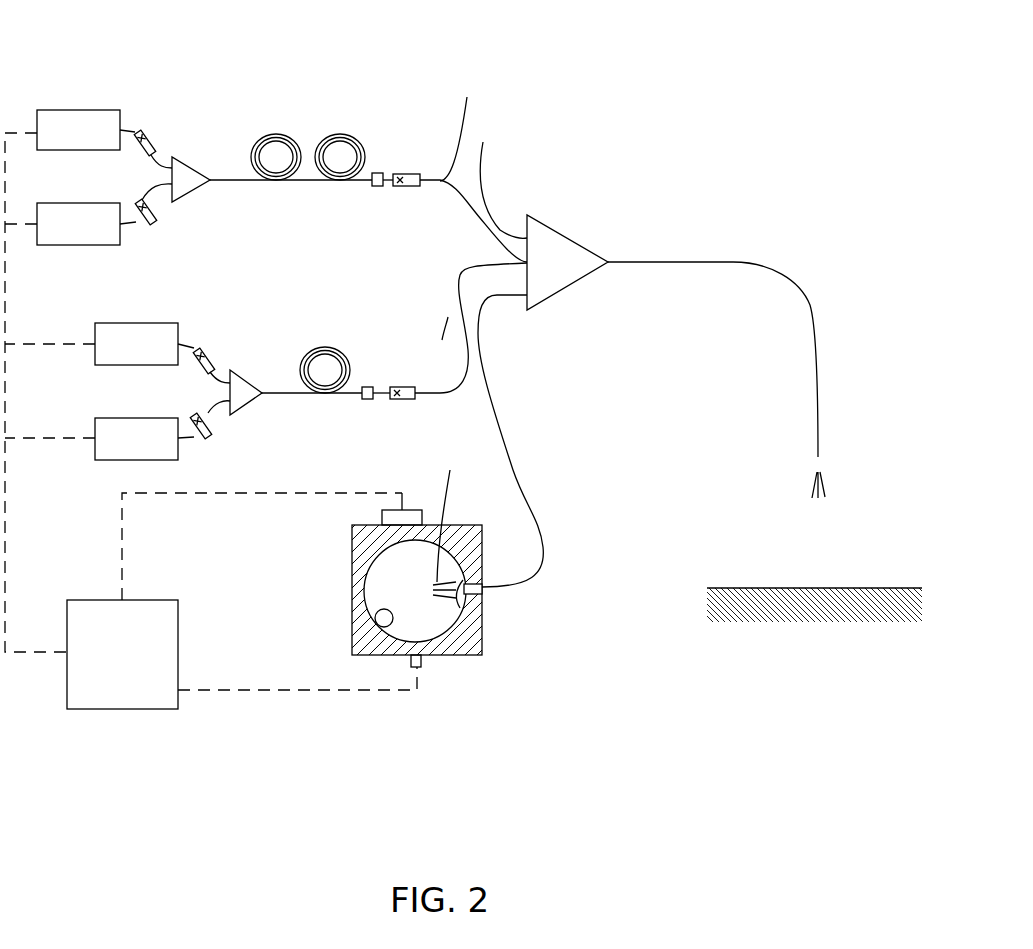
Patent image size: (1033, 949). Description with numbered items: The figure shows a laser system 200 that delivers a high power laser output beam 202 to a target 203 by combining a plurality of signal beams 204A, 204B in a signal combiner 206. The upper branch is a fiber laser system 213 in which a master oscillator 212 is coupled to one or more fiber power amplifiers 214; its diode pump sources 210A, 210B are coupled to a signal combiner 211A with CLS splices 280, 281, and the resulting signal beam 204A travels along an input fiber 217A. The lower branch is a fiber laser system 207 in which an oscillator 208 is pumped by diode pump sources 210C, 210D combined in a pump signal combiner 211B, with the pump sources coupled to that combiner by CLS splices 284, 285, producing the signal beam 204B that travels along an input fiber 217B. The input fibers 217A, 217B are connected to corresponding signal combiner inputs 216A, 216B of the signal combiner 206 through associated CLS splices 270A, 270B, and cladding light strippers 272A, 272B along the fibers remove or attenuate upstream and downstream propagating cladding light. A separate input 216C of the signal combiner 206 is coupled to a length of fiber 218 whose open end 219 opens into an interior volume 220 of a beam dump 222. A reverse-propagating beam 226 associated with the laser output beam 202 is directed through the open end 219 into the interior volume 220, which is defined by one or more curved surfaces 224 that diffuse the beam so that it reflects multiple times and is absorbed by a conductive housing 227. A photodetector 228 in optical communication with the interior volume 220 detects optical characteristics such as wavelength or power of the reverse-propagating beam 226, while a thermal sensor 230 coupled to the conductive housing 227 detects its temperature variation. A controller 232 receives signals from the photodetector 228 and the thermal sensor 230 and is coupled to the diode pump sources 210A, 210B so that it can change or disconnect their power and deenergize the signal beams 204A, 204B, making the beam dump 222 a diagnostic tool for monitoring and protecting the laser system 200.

The laser system 200 is at (655, 64).
The laser output beam 202 is at (828, 488).
The target 203 is at (795, 588).
The signal beam 204A is at (442, 199).
The signal beam 204B is at (446, 278).
The signal combiner 206 is at (567, 262).
The fiber laser system 207 is at (258, 242).
The oscillator 208 is at (326, 325).
The diode pump source 210A is at (86, 130).
The diode pump source 210B is at (86, 224).
The diode pump source 210C is at (144, 344).
The diode pump source 210D is at (144, 439).
The signal combiner 211A is at (194, 170).
The pump signal combiner 211B is at (233, 388).
The master oscillator 212 is at (304, 118).
The fiber laser system 213 is at (258, 28).
The fiber power amplifier 214 is at (399, 121).
The signal combiner input 216A is at (527, 237).
The signal combiner input 216B is at (473, 191).
The separate input 216C is at (493, 300).
The input fiber 217A is at (469, 126).
The input fiber 217B is at (446, 394).
The fiber 218 is at (500, 438).
The open end 219 is at (457, 598).
The interior volume 220 is at (410, 615).
The beam dump 222 is at (414, 580).
The curved surface 224 is at (376, 625).
The reverse-propagating beam 226 is at (451, 521).
The conductive housing 227 is at (352, 553).
The photodetector 228 is at (423, 667).
The thermal sensor 230 is at (382, 517).
The controller 232 is at (211, 421).
The CLS splice 270A is at (397, 186).
The CLS splice 270B is at (403, 400).
The cladding light stripper 272A is at (378, 172).
The cladding light stripper 272B is at (368, 387).
The CLS splice 280 is at (143, 133).
The CLS splice 281 is at (147, 228).
The CLS splice 284 is at (204, 352).
The CLS splice 285 is at (208, 437).